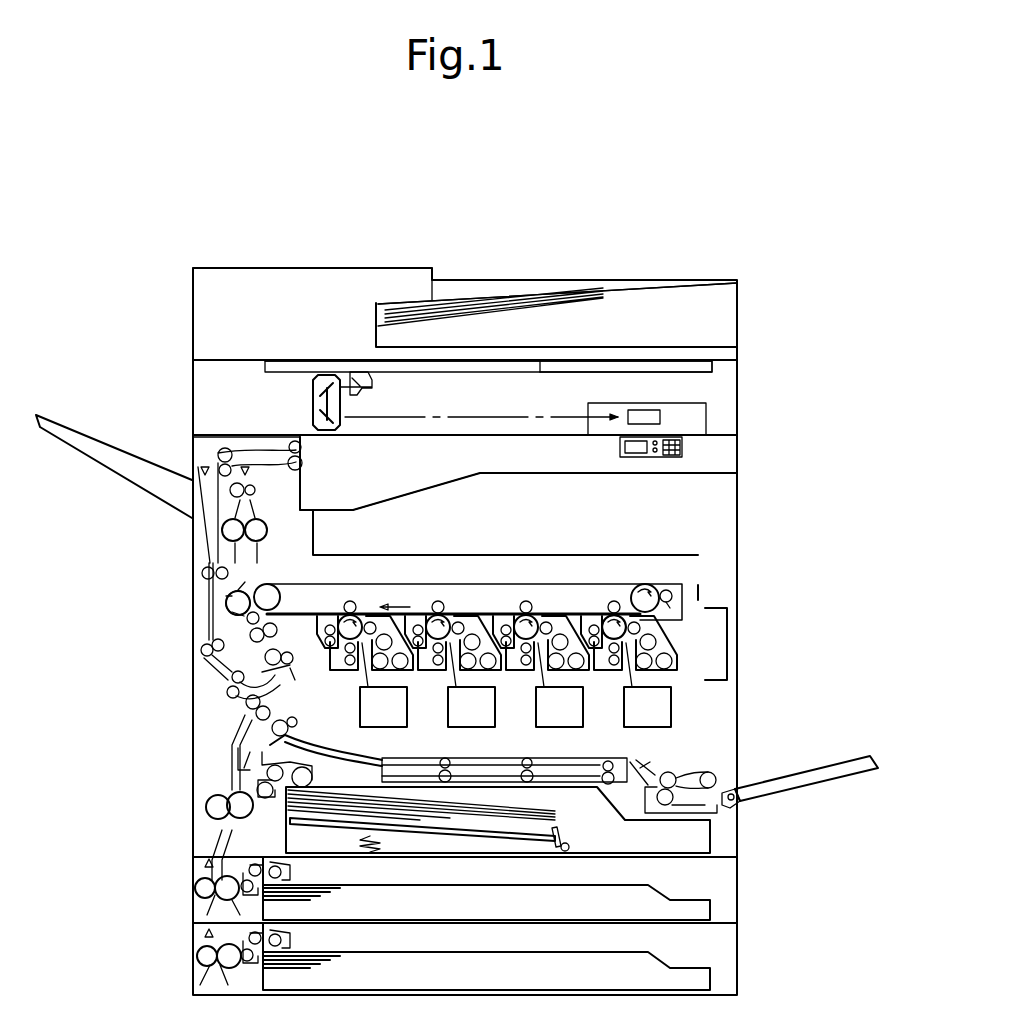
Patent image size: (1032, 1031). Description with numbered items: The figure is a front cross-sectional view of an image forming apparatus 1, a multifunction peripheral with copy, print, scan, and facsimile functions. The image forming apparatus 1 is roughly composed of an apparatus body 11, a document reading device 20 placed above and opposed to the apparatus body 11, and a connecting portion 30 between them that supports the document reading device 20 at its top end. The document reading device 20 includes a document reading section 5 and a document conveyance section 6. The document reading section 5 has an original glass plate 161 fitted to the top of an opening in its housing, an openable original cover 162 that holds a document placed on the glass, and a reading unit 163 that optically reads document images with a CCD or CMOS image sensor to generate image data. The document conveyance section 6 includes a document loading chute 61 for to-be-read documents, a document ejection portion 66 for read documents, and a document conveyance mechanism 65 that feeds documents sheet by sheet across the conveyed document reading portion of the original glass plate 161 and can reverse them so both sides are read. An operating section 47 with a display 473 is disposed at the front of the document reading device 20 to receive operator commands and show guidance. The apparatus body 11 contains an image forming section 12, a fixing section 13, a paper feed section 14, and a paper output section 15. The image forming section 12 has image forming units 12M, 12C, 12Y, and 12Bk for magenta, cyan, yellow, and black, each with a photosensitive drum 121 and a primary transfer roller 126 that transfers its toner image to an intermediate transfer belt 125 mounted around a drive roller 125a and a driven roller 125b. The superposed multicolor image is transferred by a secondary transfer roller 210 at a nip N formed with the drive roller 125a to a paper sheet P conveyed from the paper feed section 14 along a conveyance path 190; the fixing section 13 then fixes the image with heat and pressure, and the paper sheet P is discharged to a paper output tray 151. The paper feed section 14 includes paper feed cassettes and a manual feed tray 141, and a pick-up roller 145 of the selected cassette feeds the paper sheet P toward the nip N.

The image forming apparatus 1 is at (812, 337).
The document reading section 5 is at (175, 385).
The document conveyance section 6 is at (583, 268).
The apparatus body 11 is at (740, 546).
The image forming section 12 is at (570, 626).
The image forming unit for black 12Bk is at (358, 610).
The image forming unit for yellow 12Y is at (438, 603).
The image forming unit for cyan 12C is at (527, 607).
The image forming unit for magenta 12M is at (625, 626).
The fixing section 13 is at (210, 530).
The paper feed section 14 is at (715, 884).
The paper output section 15 is at (385, 490).
The document reading device 20 is at (740, 383).
The connecting portion 30 is at (188, 447).
The operating section 47 is at (683, 458).
The document loading chute 61 is at (643, 290).
The document conveyance mechanism 65 is at (266, 336).
The document ejection portion 66 is at (655, 343).
The photosensitive drum 121 is at (612, 645).
The intermediate transfer belt 125 is at (492, 570).
The drive roller 125a is at (268, 594).
The driven roller 125b is at (650, 588).
The primary transfer roller 126 is at (608, 604).
The manual feed tray 141 is at (825, 763).
The pick-up roller 145 is at (248, 932).
The paper output tray 151 is at (338, 510).
The original glass plate 161 is at (603, 372).
The original cover 162 is at (540, 355).
The reading unit 163 is at (300, 405).
The conveyance path 190 is at (236, 595).
The secondary transfer roller 210 is at (230, 625).
The display 473 is at (620, 450).
The nip N is at (245, 582).
The paper sheet P is at (540, 800).